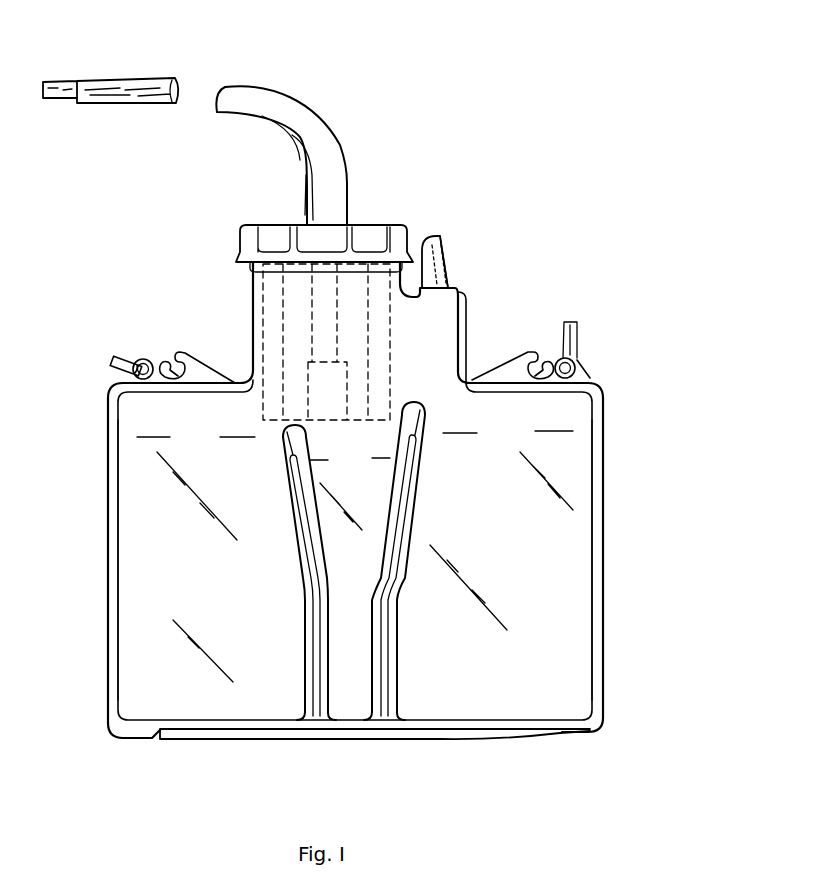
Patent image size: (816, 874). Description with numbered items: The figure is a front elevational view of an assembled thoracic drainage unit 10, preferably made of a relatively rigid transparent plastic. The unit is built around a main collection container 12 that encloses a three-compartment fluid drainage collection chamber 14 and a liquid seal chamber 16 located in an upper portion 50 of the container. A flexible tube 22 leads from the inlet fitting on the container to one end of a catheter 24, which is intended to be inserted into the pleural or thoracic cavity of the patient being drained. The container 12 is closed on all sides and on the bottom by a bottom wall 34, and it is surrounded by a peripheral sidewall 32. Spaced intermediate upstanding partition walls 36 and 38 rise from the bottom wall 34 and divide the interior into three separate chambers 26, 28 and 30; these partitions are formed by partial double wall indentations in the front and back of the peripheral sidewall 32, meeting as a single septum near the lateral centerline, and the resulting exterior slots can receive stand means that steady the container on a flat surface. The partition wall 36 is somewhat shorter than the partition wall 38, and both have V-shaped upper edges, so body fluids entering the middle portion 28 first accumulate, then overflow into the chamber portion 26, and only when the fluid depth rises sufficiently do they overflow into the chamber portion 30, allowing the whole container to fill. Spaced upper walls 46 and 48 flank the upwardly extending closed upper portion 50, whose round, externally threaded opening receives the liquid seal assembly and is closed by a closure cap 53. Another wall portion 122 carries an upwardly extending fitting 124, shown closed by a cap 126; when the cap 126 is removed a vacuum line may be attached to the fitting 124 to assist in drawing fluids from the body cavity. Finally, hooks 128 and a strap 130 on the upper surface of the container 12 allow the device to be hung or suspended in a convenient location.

The thoracic drainage unit 10 is at (140, 283).
The main collection container 12 is at (603, 492).
The fluid drainage collection chamber 14 is at (355, 443).
The liquid seal chamber 16 is at (388, 354).
The flexible tube 22 is at (313, 135).
The catheter 24 is at (56, 82).
The chamber portion 26 is at (208, 602).
The middle portion 28 is at (371, 610).
The chamber portion 30 is at (526, 586).
The peripheral sidewall 32 is at (603, 577).
The bottom wall 34 is at (425, 728).
The partition wall 36 is at (303, 503).
The partition wall 38 is at (407, 487).
The upper wall 46 is at (217, 383).
The upper wall 48 is at (503, 387).
The upper portion 50 is at (253, 295).
The closure cap 53 is at (367, 237).
The wall portion 122 is at (412, 283).
The fitting 124 is at (462, 262).
The cap 126 is at (448, 245).
The hooks 128 is at (168, 360).
The strap 130 is at (122, 370).